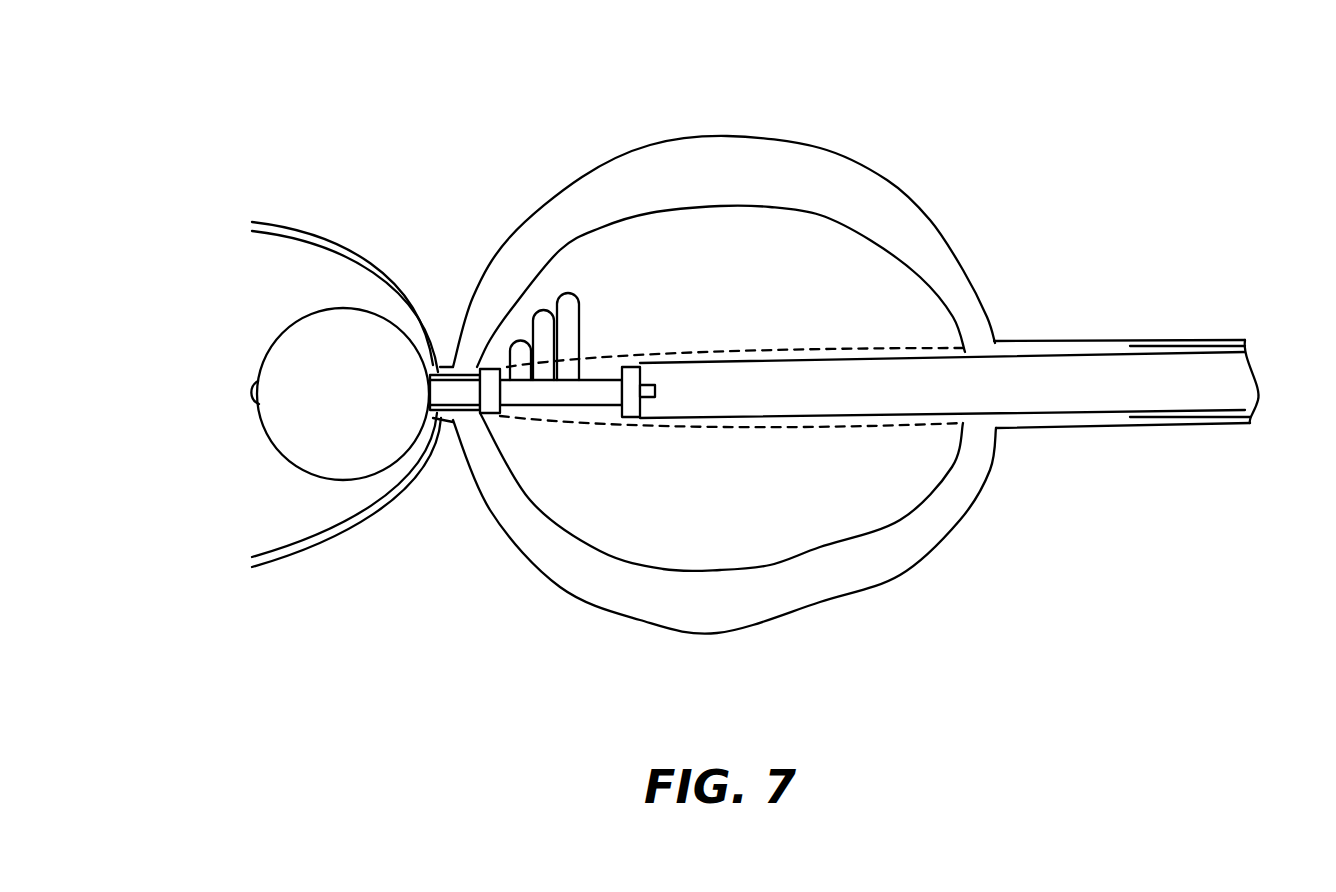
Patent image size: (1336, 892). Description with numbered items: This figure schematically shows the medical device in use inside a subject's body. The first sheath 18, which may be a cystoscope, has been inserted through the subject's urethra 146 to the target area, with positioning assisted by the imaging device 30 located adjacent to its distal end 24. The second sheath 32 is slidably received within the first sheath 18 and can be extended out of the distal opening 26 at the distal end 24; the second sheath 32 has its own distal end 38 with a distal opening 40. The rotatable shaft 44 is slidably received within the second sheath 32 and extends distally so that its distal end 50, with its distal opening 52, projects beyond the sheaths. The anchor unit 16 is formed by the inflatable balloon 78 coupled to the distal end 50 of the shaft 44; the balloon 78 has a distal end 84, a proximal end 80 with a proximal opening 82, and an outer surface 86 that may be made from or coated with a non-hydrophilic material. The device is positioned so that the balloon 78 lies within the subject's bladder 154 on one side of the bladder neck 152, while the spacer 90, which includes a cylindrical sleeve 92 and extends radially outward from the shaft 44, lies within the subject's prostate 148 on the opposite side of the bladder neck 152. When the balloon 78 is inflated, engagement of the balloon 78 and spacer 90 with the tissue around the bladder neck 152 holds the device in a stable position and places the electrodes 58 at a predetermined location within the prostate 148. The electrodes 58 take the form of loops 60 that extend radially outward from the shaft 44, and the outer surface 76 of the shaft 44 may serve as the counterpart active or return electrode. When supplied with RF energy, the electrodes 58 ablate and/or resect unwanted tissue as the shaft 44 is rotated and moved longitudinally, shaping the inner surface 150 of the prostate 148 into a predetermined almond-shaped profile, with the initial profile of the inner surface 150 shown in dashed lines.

The anchor unit 16 is at (306, 346).
The first sheath 18 is at (735, 362).
The distal end 24 is at (647, 363).
The distal opening 26 is at (630, 418).
The imaging device 30 is at (656, 391).
The second sheath 32 is at (636, 367).
The distal end 38 is at (630, 367).
The distal opening 40 is at (620, 409).
The rotatable shaft 44 is at (530, 405).
The distal end 50 is at (440, 420).
The distal opening 52 is at (427, 412).
The electrodes 58 is at (532, 300).
The loops 60 is at (521, 338).
The outer surface 76 is at (580, 395).
The inflatable balloon 78 is at (318, 321).
The proximal end 80 is at (433, 367).
The proximal opening 82 is at (405, 392).
The distal end 84 is at (258, 384).
The outer surface 86 is at (290, 327).
The spacer 90 is at (488, 362).
The cylindrical sleeve 92 is at (488, 414).
The urethra 146 is at (1058, 341).
The prostate 148 is at (888, 180).
The inner surface 150 is at (803, 215).
The bladder neck 152 is at (443, 367).
The bladder 154 is at (317, 555).